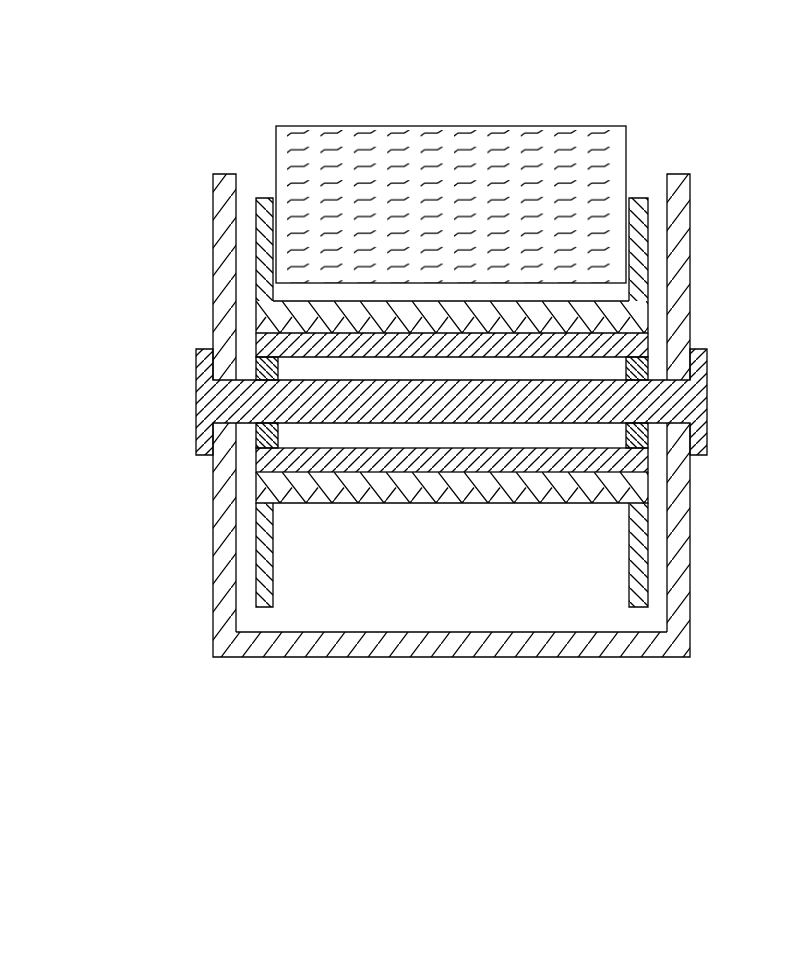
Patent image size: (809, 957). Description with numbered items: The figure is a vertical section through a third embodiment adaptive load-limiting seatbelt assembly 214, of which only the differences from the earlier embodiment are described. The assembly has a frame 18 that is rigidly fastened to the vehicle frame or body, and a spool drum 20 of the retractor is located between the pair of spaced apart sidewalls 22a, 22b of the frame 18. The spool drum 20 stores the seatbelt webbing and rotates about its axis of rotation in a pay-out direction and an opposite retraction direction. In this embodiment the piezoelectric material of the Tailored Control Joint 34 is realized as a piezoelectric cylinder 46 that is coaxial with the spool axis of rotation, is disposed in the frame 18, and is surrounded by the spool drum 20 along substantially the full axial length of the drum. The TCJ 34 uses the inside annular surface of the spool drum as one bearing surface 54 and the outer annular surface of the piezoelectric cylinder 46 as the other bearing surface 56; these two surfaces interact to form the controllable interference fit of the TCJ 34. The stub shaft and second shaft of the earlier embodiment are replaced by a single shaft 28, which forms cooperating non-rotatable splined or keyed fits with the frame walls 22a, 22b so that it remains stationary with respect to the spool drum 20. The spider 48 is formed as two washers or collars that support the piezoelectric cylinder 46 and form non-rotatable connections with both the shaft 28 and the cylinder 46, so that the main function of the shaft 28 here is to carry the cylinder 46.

The seatbelt assembly 214 is at (740, 115).
The frame 18 is at (213, 585).
The sidewall 22a is at (213, 246).
The sidewall 22b is at (690, 191).
The spool drum 20 is at (264, 197).
The bearing surface 56 is at (619, 330).
The Tailored Control Joint (TCJ) 34 is at (662, 345).
The spider 48 is at (258, 368).
The shaft 28 is at (196, 380).
The piezoelectric cylinder 46 is at (650, 460).
The bearing surface 54 is at (390, 470).